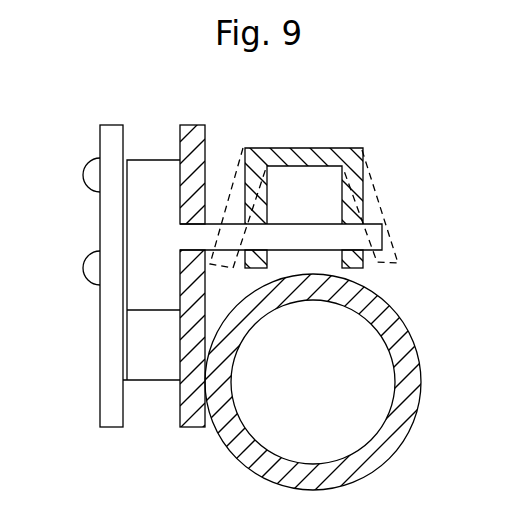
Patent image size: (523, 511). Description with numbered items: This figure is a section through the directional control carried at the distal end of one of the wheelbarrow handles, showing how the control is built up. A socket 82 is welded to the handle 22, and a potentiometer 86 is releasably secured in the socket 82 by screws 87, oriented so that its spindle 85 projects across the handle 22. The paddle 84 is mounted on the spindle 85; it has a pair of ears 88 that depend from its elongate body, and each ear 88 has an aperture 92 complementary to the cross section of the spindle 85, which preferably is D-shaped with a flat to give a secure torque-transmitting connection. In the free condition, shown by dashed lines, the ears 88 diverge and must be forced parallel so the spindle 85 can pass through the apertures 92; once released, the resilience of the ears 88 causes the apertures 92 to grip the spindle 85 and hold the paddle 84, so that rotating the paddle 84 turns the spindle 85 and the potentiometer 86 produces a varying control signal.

The handle 22 is at (422, 391).
The socket 82 is at (115, 218).
The paddle 84 is at (300, 147).
The spindle 85 is at (357, 236).
The potentiometer 86 is at (152, 175).
The screws 87 is at (83, 268).
The ears 88 is at (268, 200).
The aperture 92 is at (363, 220).